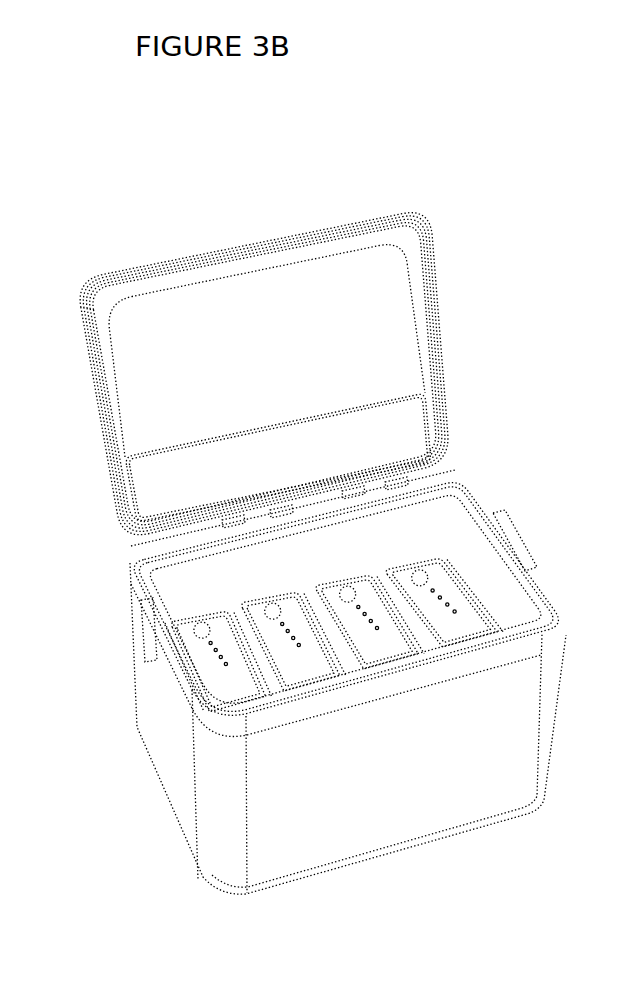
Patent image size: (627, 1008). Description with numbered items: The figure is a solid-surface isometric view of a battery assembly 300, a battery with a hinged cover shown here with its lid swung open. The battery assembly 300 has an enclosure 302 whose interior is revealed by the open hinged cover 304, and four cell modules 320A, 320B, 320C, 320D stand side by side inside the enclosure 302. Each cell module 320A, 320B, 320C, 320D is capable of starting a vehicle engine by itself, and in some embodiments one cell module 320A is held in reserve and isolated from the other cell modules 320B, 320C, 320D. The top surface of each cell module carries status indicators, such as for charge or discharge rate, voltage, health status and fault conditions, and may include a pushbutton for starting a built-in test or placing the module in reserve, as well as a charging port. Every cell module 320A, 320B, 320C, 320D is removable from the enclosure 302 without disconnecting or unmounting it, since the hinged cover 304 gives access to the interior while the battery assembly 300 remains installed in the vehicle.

The battery assembly 300 is at (124, 194).
The enclosure 302 is at (160, 779).
The hinged cover 304 is at (440, 322).
The cell module 320A is at (190, 622).
The cell module 320B is at (247, 607).
The cell module 320C is at (366, 582).
The cell module 320D is at (432, 566).